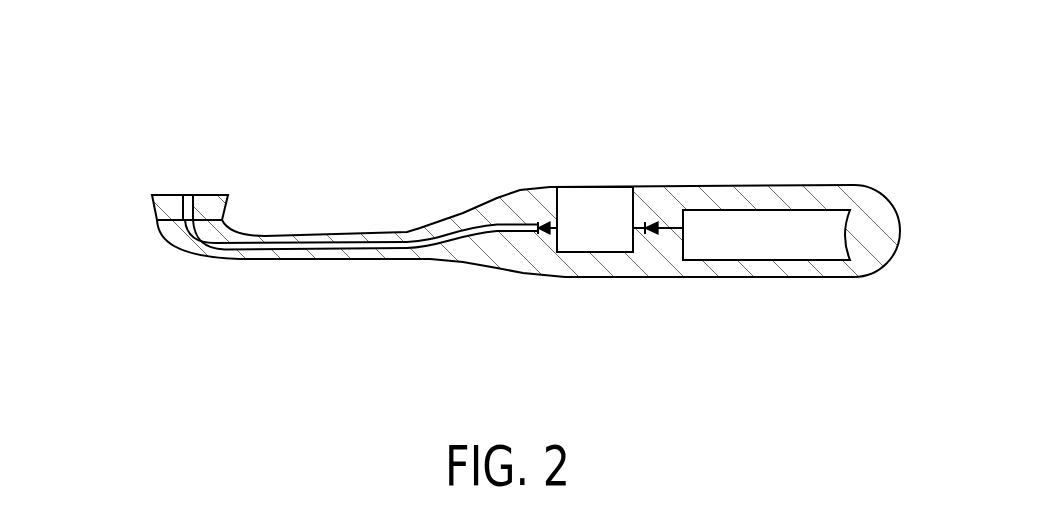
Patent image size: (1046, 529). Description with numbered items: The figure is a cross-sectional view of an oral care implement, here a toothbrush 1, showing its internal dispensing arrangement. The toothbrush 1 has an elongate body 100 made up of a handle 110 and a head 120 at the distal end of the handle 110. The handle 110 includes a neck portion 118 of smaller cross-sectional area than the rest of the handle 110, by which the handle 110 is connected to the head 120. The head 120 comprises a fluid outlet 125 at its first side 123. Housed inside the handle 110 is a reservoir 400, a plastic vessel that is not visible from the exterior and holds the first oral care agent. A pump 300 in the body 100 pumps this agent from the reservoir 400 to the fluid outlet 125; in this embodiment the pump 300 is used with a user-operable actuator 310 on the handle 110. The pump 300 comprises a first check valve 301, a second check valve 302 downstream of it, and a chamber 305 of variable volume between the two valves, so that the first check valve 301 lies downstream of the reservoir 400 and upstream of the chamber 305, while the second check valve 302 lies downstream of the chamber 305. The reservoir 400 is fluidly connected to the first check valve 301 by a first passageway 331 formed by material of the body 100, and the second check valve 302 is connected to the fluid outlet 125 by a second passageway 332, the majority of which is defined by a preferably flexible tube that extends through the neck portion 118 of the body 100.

The toothbrush 1 is at (534, 104).
The body 100 is at (474, 198).
The handle 110 is at (760, 184).
The neck portion 118 is at (288, 252).
The head 120 is at (197, 247).
The first side 123 is at (207, 207).
The fluid outlet 125 is at (187, 213).
The pump 300 is at (587, 131).
The first check valve 301 is at (652, 236).
The second check valve 302 is at (545, 236).
The chamber 305 is at (596, 221).
The user-operable actuator 310 is at (623, 186).
The first passageway 331 is at (673, 228).
The second passageway 332 is at (433, 241).
The reservoir 400 is at (766, 235).